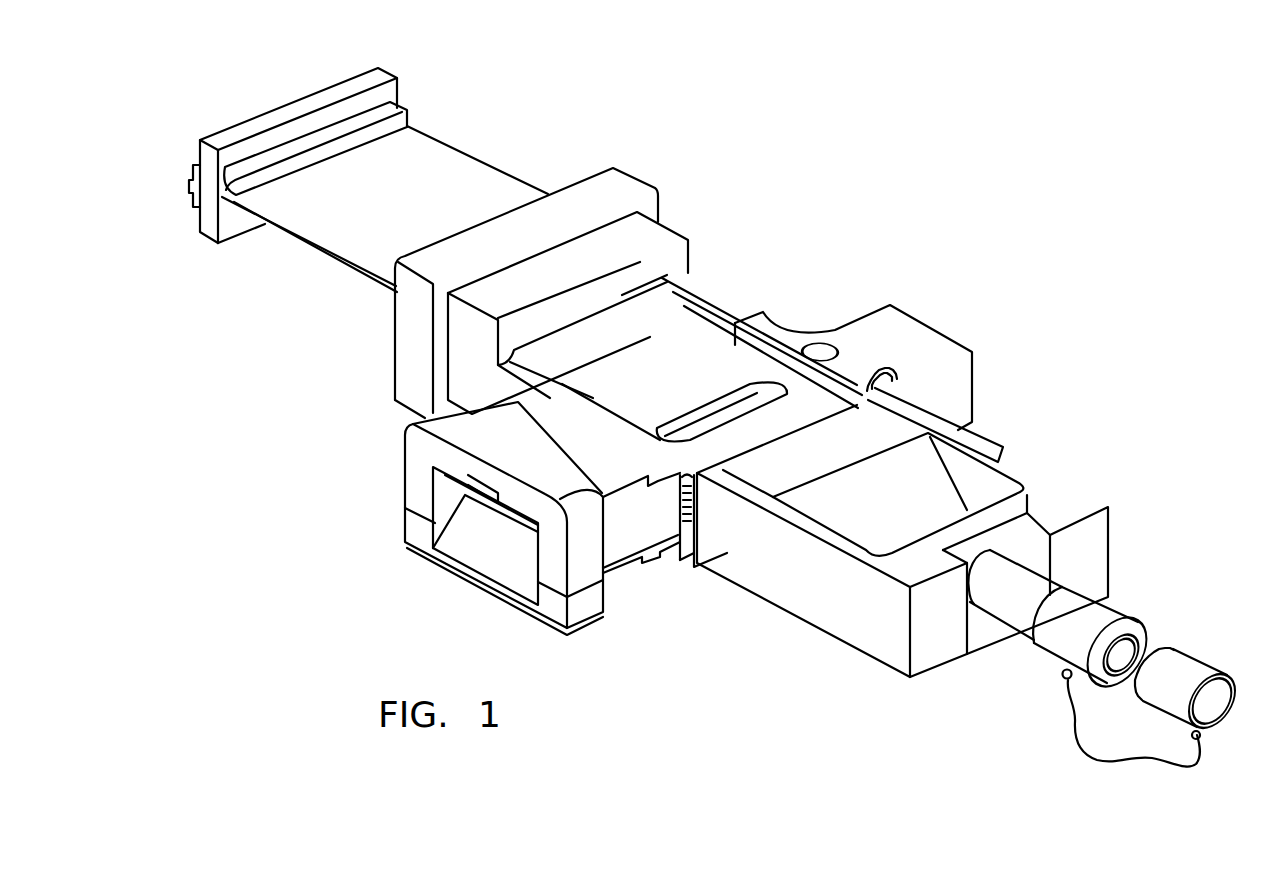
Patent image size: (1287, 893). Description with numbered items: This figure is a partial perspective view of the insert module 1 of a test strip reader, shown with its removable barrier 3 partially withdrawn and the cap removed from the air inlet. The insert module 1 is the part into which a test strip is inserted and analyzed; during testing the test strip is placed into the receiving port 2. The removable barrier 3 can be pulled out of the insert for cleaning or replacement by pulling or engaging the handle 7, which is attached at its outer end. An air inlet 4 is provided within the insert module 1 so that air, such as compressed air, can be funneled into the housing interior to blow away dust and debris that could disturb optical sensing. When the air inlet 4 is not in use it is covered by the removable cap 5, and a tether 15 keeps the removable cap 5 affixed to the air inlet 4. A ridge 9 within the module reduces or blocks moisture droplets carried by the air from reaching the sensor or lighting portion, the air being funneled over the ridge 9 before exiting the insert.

The insert module 1 is at (475, 33).
The receiving port 2 is at (500, 552).
The removable barrier 3 is at (455, 162).
The air inlet 4 is at (1138, 652).
The removable cap 5 is at (1217, 720).
The handle 7 is at (270, 112).
The ridge 9 is at (924, 494).
The tether 15 is at (1078, 745).